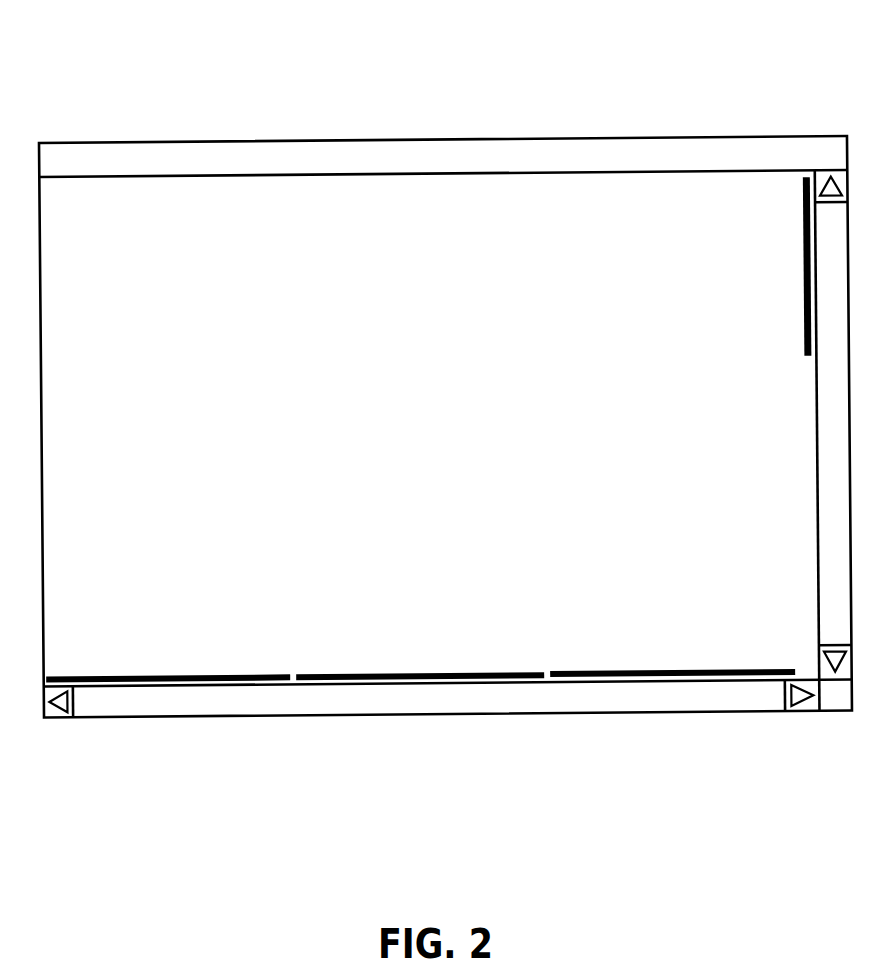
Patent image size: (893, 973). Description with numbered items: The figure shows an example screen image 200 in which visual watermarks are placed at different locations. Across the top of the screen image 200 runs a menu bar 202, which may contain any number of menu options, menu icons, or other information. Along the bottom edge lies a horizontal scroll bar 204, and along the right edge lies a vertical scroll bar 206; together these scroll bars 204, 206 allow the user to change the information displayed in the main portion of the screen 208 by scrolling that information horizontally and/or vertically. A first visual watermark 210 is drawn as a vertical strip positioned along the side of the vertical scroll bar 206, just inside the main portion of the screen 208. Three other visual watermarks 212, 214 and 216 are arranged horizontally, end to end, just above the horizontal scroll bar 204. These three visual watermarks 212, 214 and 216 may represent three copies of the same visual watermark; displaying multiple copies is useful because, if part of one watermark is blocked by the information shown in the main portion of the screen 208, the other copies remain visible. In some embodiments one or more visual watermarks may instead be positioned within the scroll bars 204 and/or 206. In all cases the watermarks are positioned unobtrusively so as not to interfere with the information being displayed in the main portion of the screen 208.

The screen image 200 is at (138, 38).
The menu bar 202 is at (376, 158).
The horizontal scroll bar 204 is at (400, 700).
The vertical scroll bar 206 is at (833, 560).
The main portion of the screen 208 is at (454, 450).
The first visual watermark 210 is at (805, 275).
The visual watermark 212 is at (168, 672).
The visual watermark 214 is at (413, 672).
The visual watermark 216 is at (668, 672).